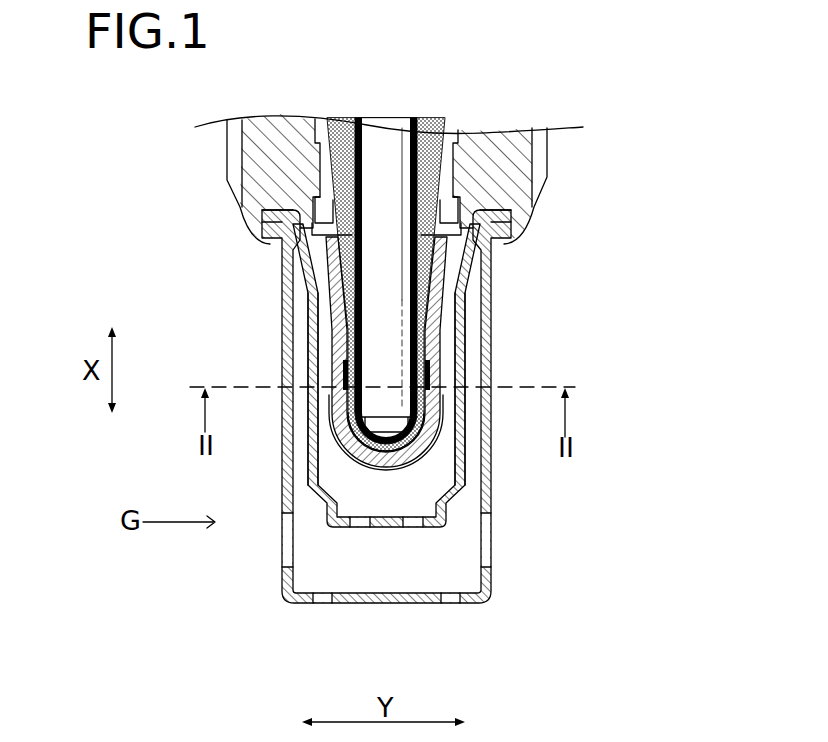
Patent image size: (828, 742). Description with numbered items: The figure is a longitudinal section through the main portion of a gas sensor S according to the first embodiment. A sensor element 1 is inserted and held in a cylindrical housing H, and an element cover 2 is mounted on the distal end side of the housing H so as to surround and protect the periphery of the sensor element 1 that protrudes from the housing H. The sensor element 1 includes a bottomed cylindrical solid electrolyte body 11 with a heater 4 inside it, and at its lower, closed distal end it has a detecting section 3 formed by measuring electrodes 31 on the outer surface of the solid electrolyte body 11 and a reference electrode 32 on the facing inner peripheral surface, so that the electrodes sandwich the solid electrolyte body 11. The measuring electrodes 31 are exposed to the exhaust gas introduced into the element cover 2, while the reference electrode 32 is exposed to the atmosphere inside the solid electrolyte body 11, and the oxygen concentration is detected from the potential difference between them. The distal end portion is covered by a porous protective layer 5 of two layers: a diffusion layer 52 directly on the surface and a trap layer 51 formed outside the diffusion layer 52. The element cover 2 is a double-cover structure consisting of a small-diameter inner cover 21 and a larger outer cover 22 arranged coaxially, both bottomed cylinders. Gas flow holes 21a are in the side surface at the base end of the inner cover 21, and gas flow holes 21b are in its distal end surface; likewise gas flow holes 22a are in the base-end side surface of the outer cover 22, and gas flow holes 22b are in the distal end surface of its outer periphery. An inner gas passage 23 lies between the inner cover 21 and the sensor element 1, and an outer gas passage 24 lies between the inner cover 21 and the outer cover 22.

The sensor element 1 is at (364, 479).
The element cover 2 is at (390, 438).
The inner cover 21 is at (381, 434).
The gas flow holes 21a is at (308, 300).
The gas flow holes 21b is at (407, 525).
The outer cover 22 is at (387, 438).
The gas flow holes 22a is at (283, 562).
The gas flow holes 22b is at (447, 600).
The inner gas passage 23 is at (462, 407).
The outer gas passage 24 is at (304, 423).
The detecting section 3 is at (388, 296).
The measuring electrodes 31 is at (343, 380).
The reference electrode 32 is at (360, 366).
The solid electrolyte body 11 is at (358, 360).
The heater 4 is at (375, 143).
The porous protective layer 5 is at (483, 387).
The trap layer 51 is at (417, 460).
The diffusion layer 52 is at (420, 445).
The gas sensor S is at (188, 203).
The housing H is at (503, 190).